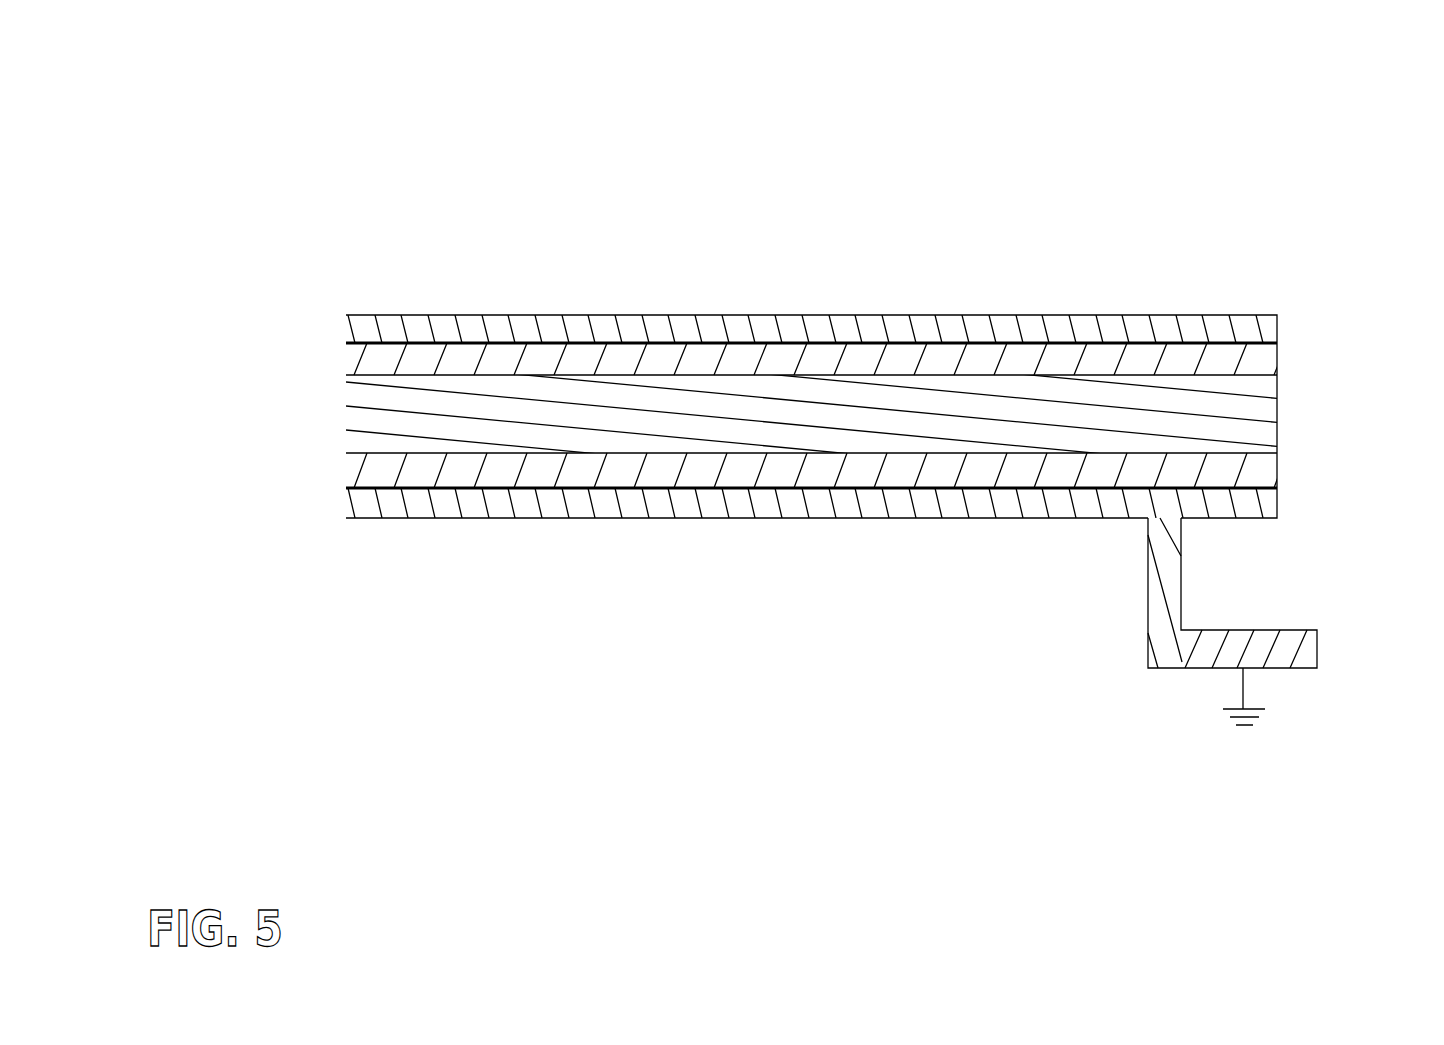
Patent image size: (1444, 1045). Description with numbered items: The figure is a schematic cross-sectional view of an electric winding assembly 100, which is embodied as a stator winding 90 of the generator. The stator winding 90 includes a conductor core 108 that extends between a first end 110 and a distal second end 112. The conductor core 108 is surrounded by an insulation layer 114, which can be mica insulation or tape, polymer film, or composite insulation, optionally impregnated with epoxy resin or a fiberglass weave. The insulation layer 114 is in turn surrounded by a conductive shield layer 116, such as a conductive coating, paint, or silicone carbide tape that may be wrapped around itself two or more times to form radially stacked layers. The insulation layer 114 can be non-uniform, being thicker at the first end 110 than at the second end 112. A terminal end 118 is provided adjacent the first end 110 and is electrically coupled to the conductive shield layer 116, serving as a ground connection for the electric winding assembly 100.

The electric winding assembly 100 is at (243, 60).
The first end 110 is at (1277, 417).
The distal second end 112 is at (345, 420).
The conductor core 108 is at (410, 455).
The insulation layer 114 is at (530, 490).
The conductive shield layer 116 is at (633, 487).
The terminal end 118 is at (1317, 645).
The stator winding 90 is at (840, 520).